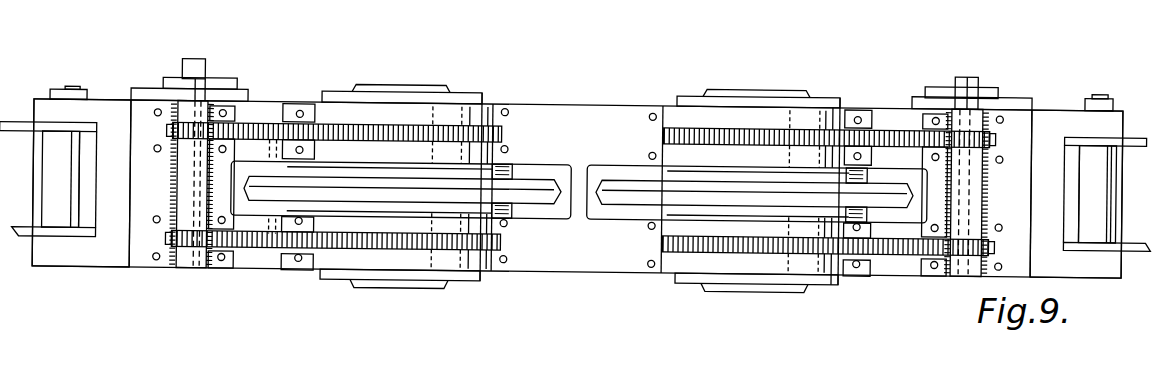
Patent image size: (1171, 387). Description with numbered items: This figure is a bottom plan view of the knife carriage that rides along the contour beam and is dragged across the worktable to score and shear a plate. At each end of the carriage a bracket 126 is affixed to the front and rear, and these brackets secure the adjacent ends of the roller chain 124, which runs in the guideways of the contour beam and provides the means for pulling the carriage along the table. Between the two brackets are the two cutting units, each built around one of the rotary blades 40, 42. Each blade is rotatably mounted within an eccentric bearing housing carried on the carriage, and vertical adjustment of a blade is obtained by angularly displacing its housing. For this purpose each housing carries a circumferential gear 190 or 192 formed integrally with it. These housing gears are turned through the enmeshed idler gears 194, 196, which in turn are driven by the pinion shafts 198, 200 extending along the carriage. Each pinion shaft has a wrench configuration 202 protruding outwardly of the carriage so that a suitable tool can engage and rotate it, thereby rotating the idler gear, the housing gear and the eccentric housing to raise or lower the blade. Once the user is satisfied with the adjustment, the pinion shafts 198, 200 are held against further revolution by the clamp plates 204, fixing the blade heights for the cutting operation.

The rotary blade 40 is at (615, 185).
The rotary blade 42 is at (529, 181).
The roller chain 124 is at (1134, 252).
The brackets 126 is at (100, 100).
The circumferential gear 190 is at (815, 132).
The circumferential gear 192 is at (485, 125).
The idler gear 194 is at (890, 133).
The idler gear 196 is at (258, 125).
The pinion shaft 198 is at (977, 115).
The pinion shaft 200 is at (186, 188).
The wrench configuration 202 is at (196, 58).
The clamp plates 204 is at (226, 80).